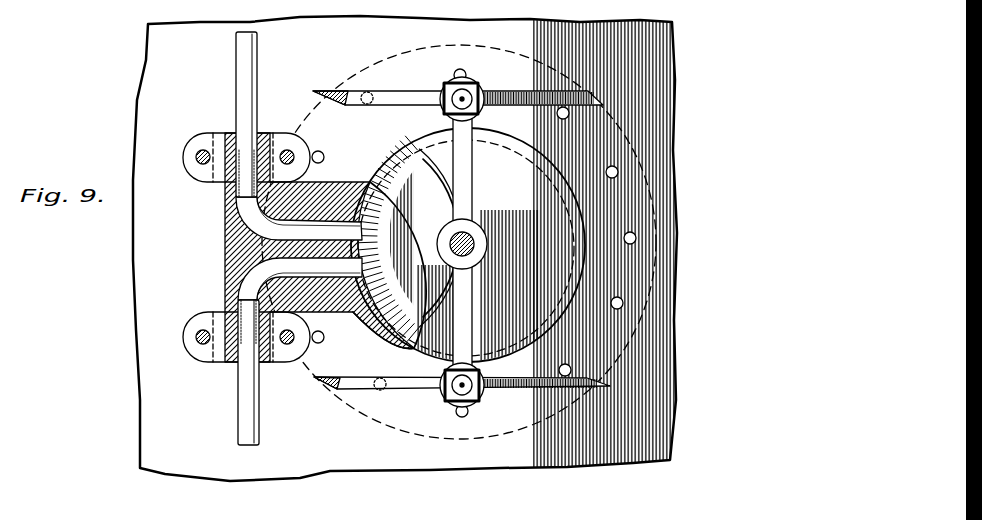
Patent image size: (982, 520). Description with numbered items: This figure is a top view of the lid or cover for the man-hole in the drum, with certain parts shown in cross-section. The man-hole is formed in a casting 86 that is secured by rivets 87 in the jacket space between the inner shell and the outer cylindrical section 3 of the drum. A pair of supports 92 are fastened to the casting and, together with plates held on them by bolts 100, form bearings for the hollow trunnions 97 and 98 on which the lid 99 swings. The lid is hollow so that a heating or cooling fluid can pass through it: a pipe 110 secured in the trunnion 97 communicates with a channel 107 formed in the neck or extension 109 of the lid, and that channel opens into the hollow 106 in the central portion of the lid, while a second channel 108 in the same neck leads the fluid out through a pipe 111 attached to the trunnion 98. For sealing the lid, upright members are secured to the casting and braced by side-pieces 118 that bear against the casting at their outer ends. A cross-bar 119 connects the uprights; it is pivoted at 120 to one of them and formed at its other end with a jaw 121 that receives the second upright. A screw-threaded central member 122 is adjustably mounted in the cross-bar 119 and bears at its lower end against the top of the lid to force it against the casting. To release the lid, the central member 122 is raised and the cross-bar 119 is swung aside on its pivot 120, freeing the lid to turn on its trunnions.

The outer cylindrical section 3 is at (353, 460).
The casting 86 is at (428, 446).
The rivets 87 is at (622, 300).
The supports 92 is at (202, 350).
The hollow trunnion 97 is at (232, 140).
The hollow trunnion 98 is at (240, 348).
The lid 99 is at (396, 148).
The bolts 100 is at (198, 160).
The hollow 106 is at (385, 332).
The channel 107 is at (252, 212).
The channel 108 is at (240, 280).
The neck or extension 109 is at (335, 190).
The pipe 110 is at (243, 67).
The pipe 111 is at (247, 403).
The side-pieces 118 is at (498, 96).
The cross-bar 119 is at (464, 178).
The pivot 120 is at (470, 405).
The jaw 121 is at (441, 97).
The central member 122 is at (470, 235).